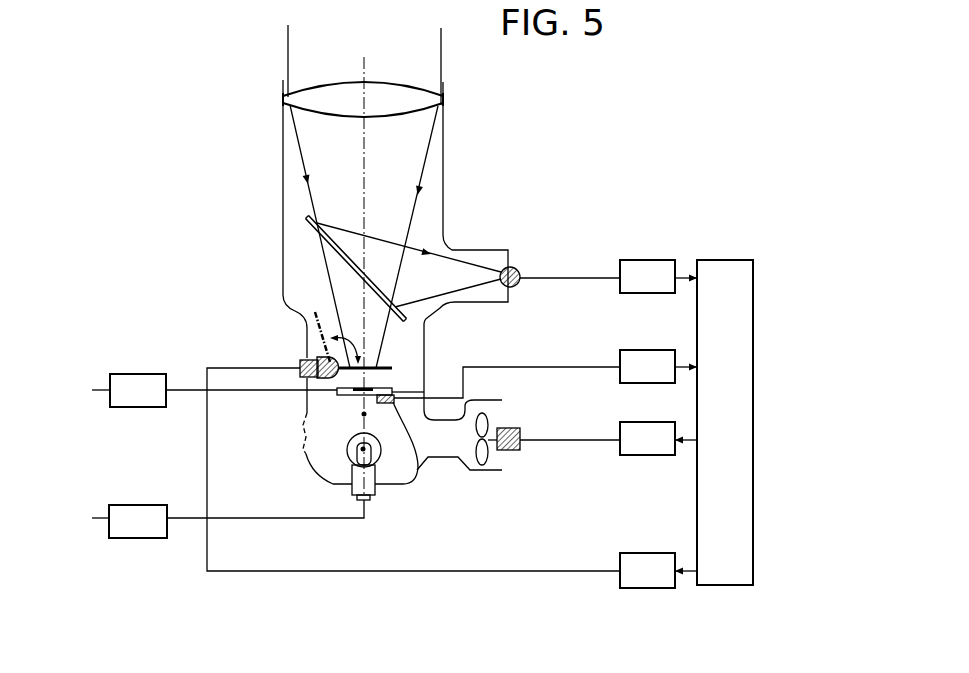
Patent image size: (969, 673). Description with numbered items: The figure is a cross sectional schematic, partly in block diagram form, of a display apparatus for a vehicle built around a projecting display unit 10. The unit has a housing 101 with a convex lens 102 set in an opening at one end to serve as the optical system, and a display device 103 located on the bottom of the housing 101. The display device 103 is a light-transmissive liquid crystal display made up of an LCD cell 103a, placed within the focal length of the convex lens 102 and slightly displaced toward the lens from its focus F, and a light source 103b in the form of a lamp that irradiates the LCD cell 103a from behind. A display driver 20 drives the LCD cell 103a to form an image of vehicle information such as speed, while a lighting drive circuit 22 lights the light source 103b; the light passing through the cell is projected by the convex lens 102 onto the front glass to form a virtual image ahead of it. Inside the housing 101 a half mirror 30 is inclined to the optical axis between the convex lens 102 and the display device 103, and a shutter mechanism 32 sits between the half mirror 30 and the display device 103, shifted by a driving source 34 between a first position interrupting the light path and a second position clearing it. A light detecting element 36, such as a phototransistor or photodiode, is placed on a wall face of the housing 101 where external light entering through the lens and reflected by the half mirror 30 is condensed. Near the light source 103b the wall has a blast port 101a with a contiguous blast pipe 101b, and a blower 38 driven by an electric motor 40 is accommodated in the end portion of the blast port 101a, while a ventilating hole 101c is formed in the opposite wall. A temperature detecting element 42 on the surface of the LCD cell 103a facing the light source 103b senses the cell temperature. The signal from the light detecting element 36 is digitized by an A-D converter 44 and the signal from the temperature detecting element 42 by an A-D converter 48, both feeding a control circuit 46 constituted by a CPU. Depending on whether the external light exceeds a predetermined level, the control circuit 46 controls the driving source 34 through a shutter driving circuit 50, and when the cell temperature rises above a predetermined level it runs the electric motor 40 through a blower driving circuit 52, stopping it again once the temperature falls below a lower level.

The projecting display unit 10 is at (277, 160).
The housing 101 is at (283, 183).
The blast port 101a is at (433, 435).
The blast pipe 101b is at (478, 398).
The ventilating hole 101c is at (302, 447).
The convex lens 102 is at (325, 98).
The display device 103 is at (323, 405).
The liquid crystal display cell 103a is at (390, 385).
The light source 103b is at (375, 487).
The half mirror 30 is at (335, 250).
The shutter mechanism 32 is at (386, 383).
The driving source 34 is at (303, 360).
The light detecting element 36 is at (518, 268).
The blower 38 is at (488, 457).
The electric motor 40 is at (521, 442).
The temperature detecting element 42 is at (410, 480).
The focus F is at (364, 414).
The display driver 20 is at (143, 385).
The lighting drive circuit 22 is at (148, 517).
The A-D converter 44 is at (651, 275).
The A-D converter 48 is at (650, 365).
The blower driving circuit 52 is at (653, 442).
The shutter driving circuit 50 is at (651, 582).
The control circuit 46 is at (753, 443).